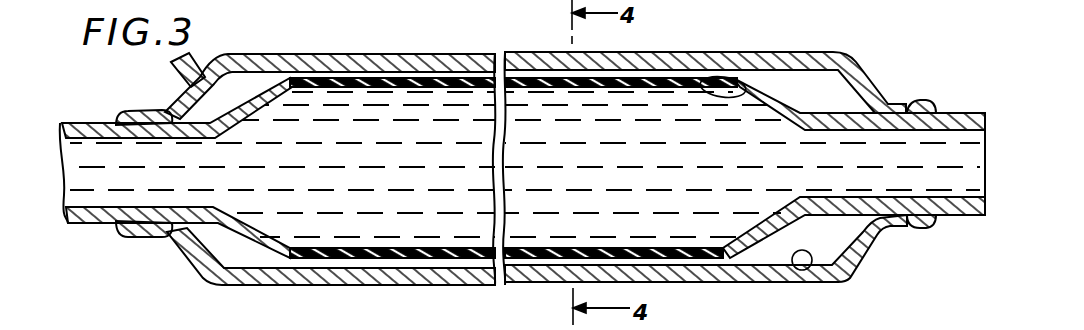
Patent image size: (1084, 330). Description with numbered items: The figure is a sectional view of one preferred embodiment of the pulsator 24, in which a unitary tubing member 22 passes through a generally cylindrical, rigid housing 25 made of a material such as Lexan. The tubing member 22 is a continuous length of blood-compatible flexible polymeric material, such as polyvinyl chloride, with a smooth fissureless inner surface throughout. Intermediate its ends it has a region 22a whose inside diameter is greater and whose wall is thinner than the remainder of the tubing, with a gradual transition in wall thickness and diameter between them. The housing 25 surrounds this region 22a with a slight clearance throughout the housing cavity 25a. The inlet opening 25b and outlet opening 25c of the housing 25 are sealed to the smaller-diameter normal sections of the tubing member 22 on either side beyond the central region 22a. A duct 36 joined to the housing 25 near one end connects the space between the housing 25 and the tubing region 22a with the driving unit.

The unitary tubing member 22 is at (93, 228).
The intermediate region of tubing 22a is at (743, 90).
The pulsator 24 is at (252, 297).
The housing 25 is at (865, 262).
The housing cavity 25a is at (813, 270).
The inlet opening 25b is at (148, 108).
The outlet opening 25c is at (907, 103).
The duct 36 is at (193, 58).